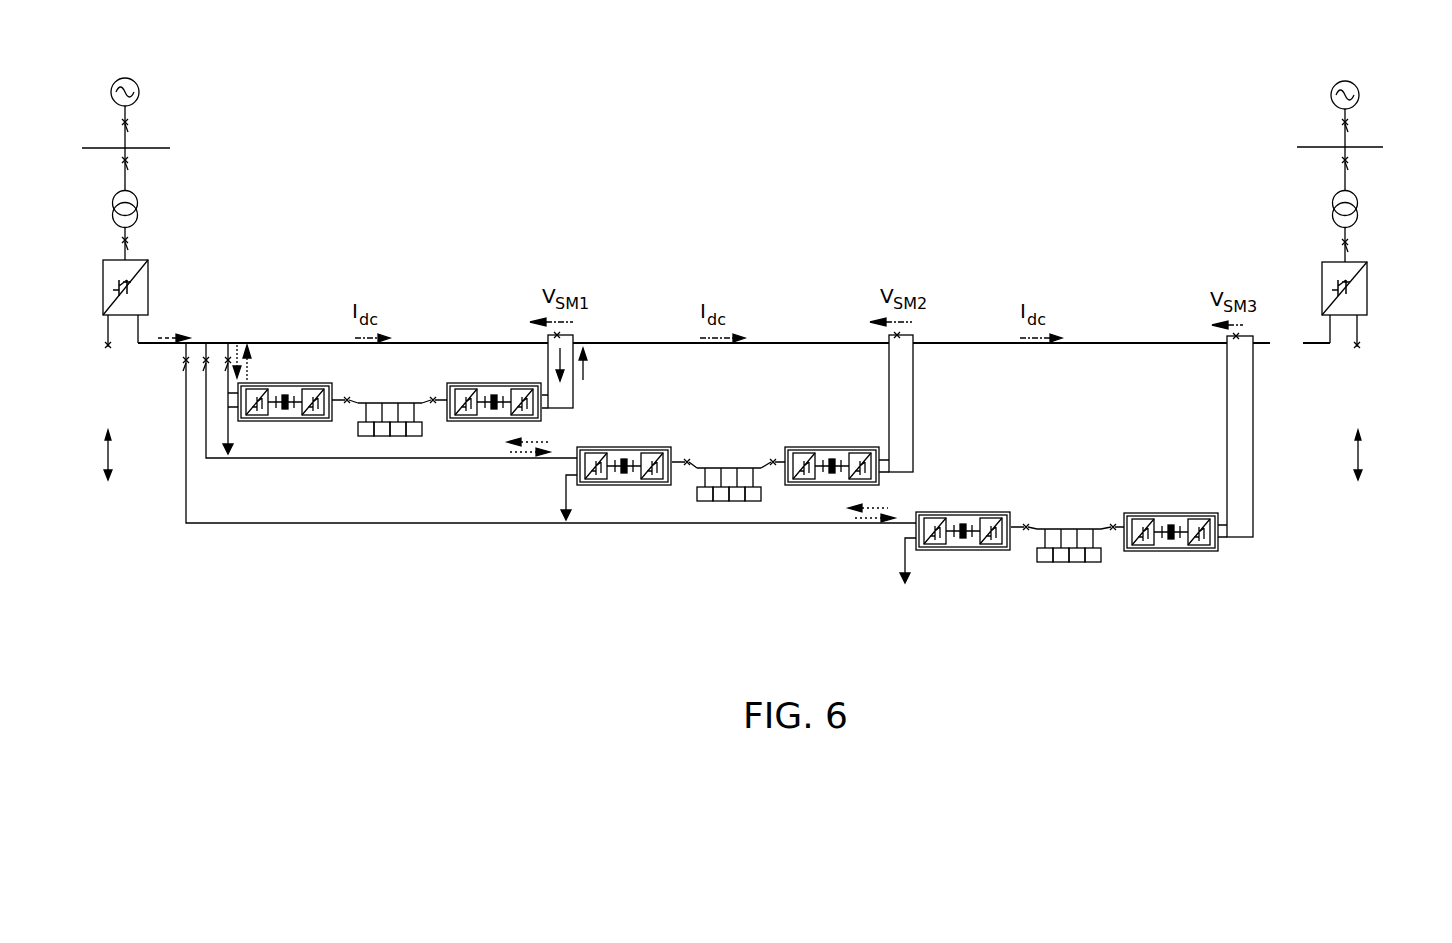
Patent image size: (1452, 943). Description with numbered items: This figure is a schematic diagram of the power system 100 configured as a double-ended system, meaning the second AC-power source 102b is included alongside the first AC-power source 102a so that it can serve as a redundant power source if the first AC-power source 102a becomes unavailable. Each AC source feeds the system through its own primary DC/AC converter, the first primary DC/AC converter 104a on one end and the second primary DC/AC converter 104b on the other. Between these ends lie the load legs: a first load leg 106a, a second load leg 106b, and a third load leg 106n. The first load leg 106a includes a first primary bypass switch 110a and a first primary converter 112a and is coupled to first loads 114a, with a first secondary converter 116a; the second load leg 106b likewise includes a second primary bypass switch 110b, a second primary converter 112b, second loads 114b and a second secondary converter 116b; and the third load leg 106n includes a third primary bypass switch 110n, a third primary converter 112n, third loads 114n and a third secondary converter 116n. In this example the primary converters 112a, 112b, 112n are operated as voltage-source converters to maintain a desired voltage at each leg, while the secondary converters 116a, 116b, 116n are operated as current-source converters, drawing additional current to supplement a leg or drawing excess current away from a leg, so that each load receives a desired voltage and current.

The power system 100 is at (1120, 93).
The first AC-power source 102a is at (138, 82).
The second AC-power source 102b is at (1332, 93).
The first primary DC/AC converter 104a is at (140, 260).
The second primary DC/AC converter 104b is at (1327, 262).
The first load leg 106a is at (626, 358).
The second load leg 106b is at (930, 425).
The third load leg 106n is at (1272, 512).
The first primary bypass switch 110a is at (565, 333).
The second primary bypass switch 110b is at (902, 334).
The third primary bypass switch 110n is at (1243, 335).
The first primary converter 112a is at (488, 383).
The second primary converter 112b is at (783, 458).
The third primary converter 112n is at (1123, 520).
The first loads 114a is at (378, 460).
The second loads 114b is at (716, 526).
The third loads 114n is at (1058, 612).
The first secondary converter 116a is at (296, 383).
The second secondary converter 116b is at (663, 487).
The third secondary converter 116n is at (1003, 550).